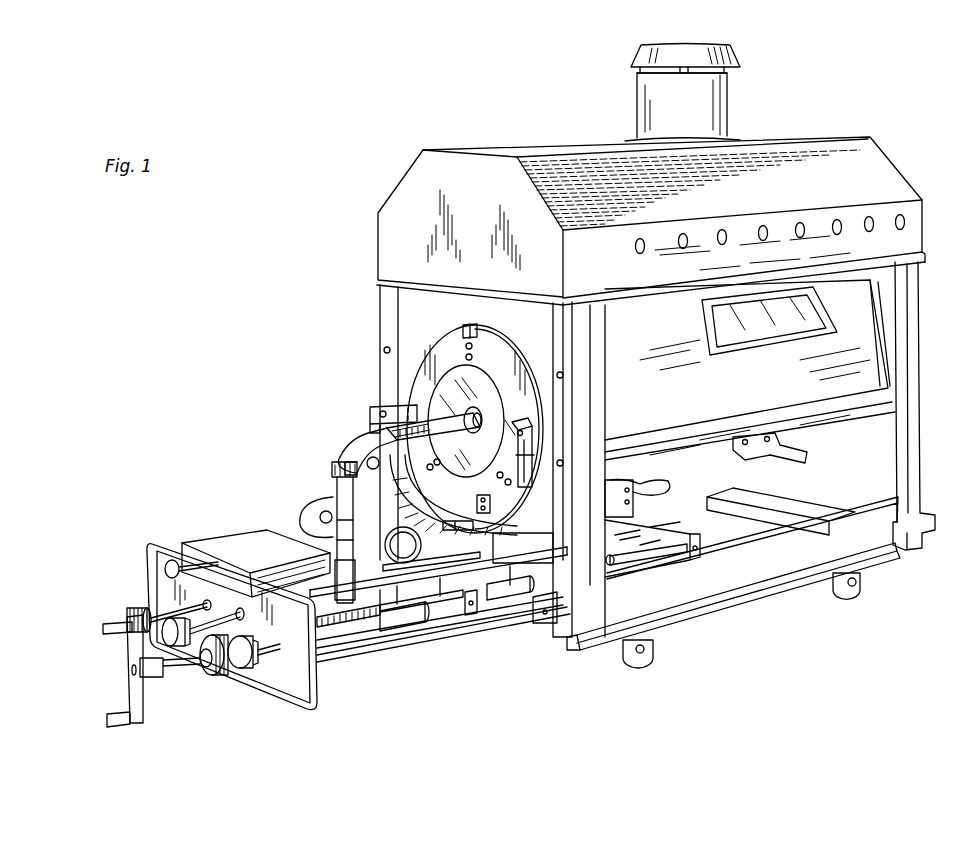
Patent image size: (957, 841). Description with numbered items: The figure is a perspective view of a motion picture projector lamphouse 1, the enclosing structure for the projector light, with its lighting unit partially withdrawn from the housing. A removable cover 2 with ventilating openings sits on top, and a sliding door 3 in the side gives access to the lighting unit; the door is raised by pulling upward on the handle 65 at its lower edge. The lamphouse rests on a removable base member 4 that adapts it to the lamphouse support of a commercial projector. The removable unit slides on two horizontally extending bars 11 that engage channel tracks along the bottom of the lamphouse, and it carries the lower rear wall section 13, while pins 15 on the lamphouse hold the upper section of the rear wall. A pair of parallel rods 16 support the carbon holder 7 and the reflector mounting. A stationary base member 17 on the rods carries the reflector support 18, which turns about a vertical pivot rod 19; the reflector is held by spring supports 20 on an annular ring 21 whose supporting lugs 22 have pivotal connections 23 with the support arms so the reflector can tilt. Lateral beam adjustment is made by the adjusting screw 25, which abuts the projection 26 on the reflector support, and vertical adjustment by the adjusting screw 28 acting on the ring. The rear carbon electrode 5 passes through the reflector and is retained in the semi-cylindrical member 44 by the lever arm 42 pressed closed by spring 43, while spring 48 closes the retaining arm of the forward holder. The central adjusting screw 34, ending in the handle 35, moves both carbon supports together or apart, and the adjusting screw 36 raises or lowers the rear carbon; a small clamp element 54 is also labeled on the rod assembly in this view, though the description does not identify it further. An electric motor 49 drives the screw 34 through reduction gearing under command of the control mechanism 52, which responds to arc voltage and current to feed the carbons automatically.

The lamphouse 1 is at (910, 330).
The removable cover 2 is at (878, 167).
The sliding door 3 is at (878, 380).
The base member 4 is at (780, 592).
The carbon electrode 5 is at (470, 410).
The carbon holder 7 is at (357, 443).
The horizontally extending bars 11 is at (423, 643).
The rear wall section 13 is at (288, 690).
The pins 15 is at (383, 349).
The rods 16 is at (365, 630).
The base member 17 is at (510, 600).
The reflector support 18 is at (370, 425).
The vertical pivot rod 19 is at (466, 430).
The spring supports 20 is at (467, 324).
The annular ring 21 is at (488, 337).
The supporting lugs 22 is at (533, 456).
The pivotal connections 23 is at (383, 407).
The adjusting screw 25 is at (200, 620).
The projection 26 is at (505, 548).
The adjusting screw 28 is at (193, 602).
The adjusting screw 34 is at (343, 622).
The handle 35 is at (127, 715).
The adjusting screw 36 is at (337, 490).
The lever arm 42 is at (422, 470).
The spring 43 is at (362, 455).
The semi-cylindrical member 44 is at (452, 423).
The spring 48 is at (672, 492).
The electric motor 49 is at (312, 510).
The control mechanism 52 is at (256, 563).
The clamp 54 is at (471, 615).
The handle 65 is at (778, 460).